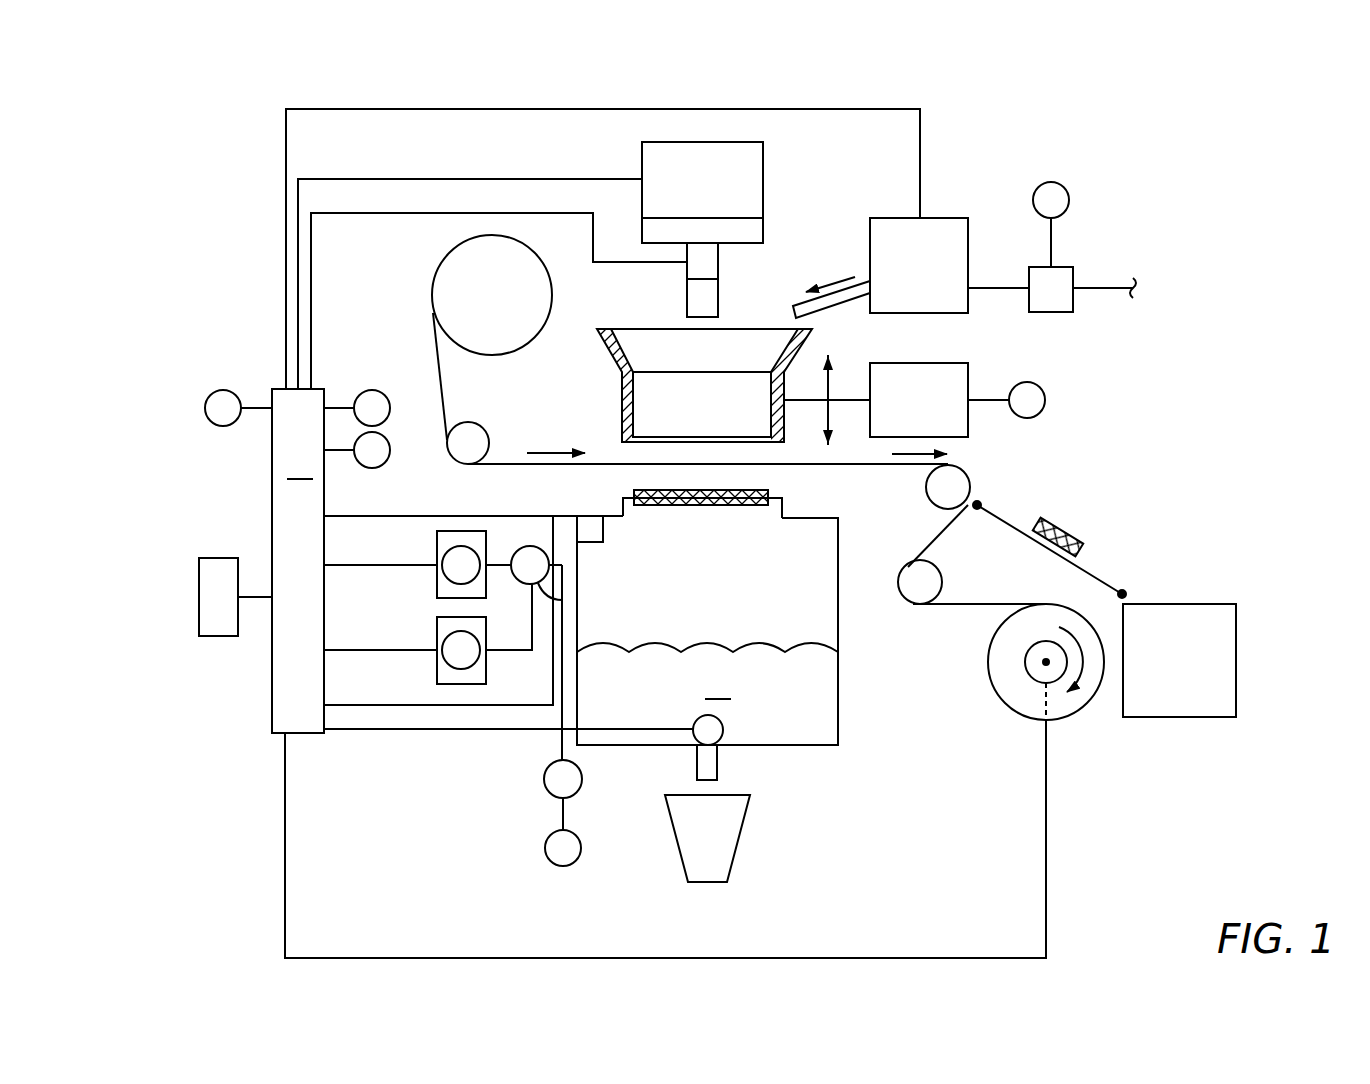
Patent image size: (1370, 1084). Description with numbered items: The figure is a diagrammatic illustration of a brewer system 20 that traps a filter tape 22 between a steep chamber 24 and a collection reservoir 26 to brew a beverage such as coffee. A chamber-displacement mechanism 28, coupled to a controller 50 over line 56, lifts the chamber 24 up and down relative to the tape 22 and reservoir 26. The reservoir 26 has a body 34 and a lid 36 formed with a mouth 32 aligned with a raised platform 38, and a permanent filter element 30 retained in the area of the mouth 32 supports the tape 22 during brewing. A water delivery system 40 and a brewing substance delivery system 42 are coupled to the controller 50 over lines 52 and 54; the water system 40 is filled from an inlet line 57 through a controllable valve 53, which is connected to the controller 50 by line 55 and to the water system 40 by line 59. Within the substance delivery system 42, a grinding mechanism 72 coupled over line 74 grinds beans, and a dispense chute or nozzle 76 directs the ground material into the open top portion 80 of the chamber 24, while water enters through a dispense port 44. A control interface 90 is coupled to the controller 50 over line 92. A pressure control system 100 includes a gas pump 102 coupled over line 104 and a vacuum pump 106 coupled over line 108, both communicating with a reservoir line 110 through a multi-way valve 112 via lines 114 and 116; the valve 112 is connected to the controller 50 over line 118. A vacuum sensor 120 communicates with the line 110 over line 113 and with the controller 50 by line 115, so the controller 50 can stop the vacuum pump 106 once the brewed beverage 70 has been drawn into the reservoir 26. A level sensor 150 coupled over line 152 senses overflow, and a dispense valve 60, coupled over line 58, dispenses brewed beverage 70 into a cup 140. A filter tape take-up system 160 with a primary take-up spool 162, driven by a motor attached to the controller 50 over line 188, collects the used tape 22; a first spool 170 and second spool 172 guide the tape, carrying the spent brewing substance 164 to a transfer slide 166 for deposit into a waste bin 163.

The brewer system 20 is at (975, 98).
The filter tape 22 is at (435, 337).
The steep chamber 24 is at (604, 323).
The collection reservoir 26 is at (856, 762).
The chamber-displacement mechanism 28 is at (972, 378).
The permanent filter element 30 is at (763, 508).
The mouth 32 is at (720, 512).
The body 34 is at (845, 702).
The lid 36 is at (812, 525).
The raised platform 38 is at (797, 497).
The water delivery system 40 is at (975, 178).
The brewing substance delivery system 42 is at (795, 178).
The dispense port 44 is at (802, 318).
The controller 50 is at (298, 561).
The line 52 is at (778, 109).
The controllable valve 53 is at (1045, 312).
The line 54 is at (487, 177).
The line 55 is at (1055, 242).
The line 56 is at (985, 405).
The inlet line 57 is at (1098, 272).
The line 58 is at (450, 733).
The line 59 is at (985, 280).
The dispense valve 60 is at (725, 726).
The brewed beverage 70 is at (707, 671).
The grinding mechanism 72 is at (718, 254).
The line 74 is at (380, 215).
The dispense chute or nozzle 76 is at (687, 298).
The open top portion 80 is at (783, 330).
The control interface 90 is at (217, 556).
The line 92 is at (258, 600).
The pressure control system 100 is at (363, 772).
The gas pump 102 is at (437, 656).
The line 104 is at (400, 648).
The vacuum pump 106 is at (437, 572).
The line 108 is at (392, 562).
The reservoir line 110 is at (563, 556).
The multi-way valve 112 is at (565, 601).
The line 113 is at (560, 742).
The line 114 is at (495, 648).
The line 115 is at (262, 403).
The line 116 is at (500, 560).
The line 118 is at (512, 706).
The vacuum sensor 120 is at (585, 778).
The cup 140 is at (745, 833).
The level sensor 150 is at (605, 533).
The line 152 is at (440, 515).
The filter tape take-up system 160 is at (1078, 730).
The primary take-up spool 162 is at (1026, 663).
The waste bin 163 is at (1200, 717).
The spent brewing substance 164 is at (1077, 520).
The transfer slide 166 is at (1097, 574).
The first spool 170 is at (956, 483).
The second spool 172 is at (915, 588).
The line 188 is at (993, 958).